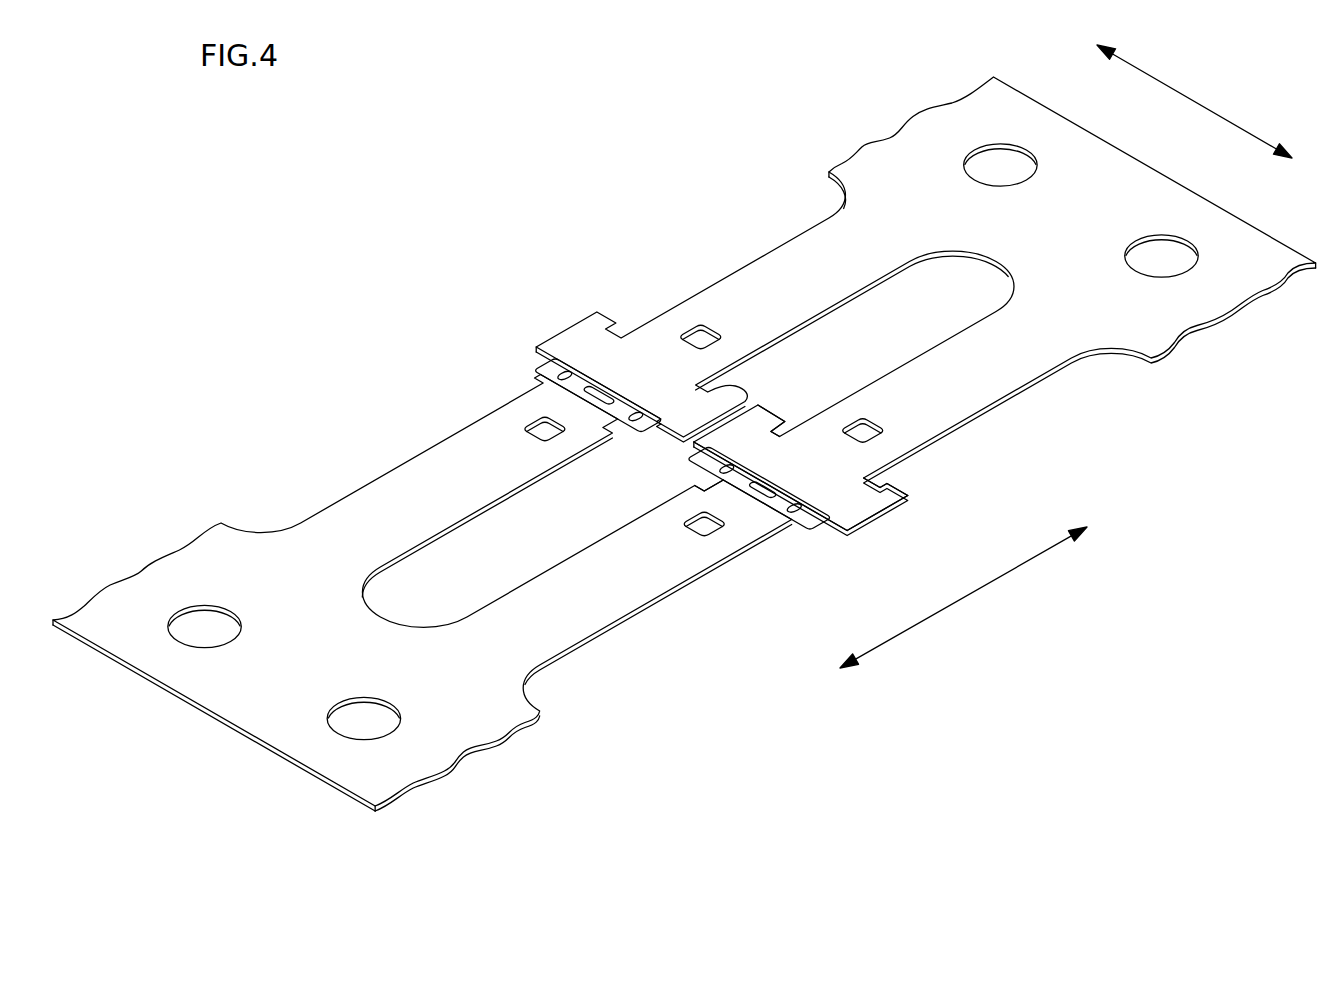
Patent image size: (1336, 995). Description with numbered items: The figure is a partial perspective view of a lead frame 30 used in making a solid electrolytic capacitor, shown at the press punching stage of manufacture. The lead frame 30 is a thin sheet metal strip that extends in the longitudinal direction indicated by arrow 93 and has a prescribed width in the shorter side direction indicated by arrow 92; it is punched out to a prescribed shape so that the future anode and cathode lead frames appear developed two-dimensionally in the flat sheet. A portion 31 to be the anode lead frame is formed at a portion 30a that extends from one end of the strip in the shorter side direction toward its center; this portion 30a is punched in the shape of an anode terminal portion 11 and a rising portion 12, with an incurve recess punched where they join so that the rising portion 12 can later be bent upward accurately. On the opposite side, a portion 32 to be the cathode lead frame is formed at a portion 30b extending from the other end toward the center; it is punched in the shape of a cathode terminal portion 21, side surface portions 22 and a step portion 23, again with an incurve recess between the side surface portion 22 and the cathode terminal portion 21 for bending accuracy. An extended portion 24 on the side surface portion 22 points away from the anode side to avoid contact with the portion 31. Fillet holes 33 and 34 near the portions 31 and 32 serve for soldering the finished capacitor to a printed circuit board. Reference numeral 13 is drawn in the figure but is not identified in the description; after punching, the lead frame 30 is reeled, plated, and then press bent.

The anode terminal portion 11 is at (741, 503).
The rising portion 12 is at (764, 494).
The through hole 13 is at (785, 518).
The cathode terminal portion 21 is at (838, 456).
The side surface portion 22 is at (862, 501).
The step portion 23 is at (893, 495).
The extended portion 24 is at (902, 497).
The lead frame 30 is at (684, 443).
The portion 30a is at (578, 620).
The portion 30b is at (978, 383).
The portion to be the anode lead frame 31 is at (517, 338).
The portion to be the cathode lead frame 32 is at (612, 280).
The fillet hole 33 is at (716, 527).
The fillet hole 34 is at (877, 425).
The arrow 92 is at (962, 599).
The arrow 93 is at (1205, 97).